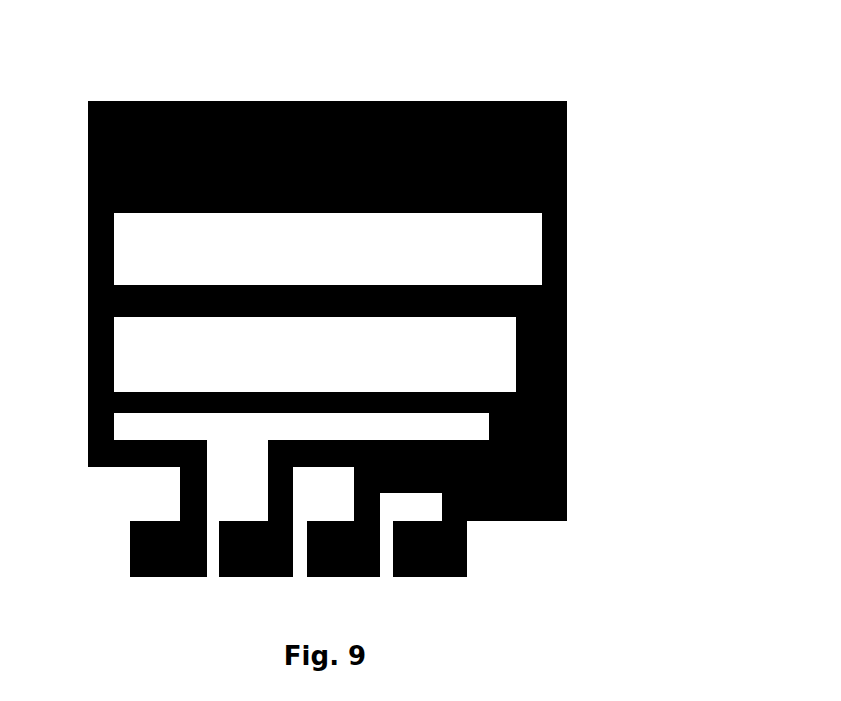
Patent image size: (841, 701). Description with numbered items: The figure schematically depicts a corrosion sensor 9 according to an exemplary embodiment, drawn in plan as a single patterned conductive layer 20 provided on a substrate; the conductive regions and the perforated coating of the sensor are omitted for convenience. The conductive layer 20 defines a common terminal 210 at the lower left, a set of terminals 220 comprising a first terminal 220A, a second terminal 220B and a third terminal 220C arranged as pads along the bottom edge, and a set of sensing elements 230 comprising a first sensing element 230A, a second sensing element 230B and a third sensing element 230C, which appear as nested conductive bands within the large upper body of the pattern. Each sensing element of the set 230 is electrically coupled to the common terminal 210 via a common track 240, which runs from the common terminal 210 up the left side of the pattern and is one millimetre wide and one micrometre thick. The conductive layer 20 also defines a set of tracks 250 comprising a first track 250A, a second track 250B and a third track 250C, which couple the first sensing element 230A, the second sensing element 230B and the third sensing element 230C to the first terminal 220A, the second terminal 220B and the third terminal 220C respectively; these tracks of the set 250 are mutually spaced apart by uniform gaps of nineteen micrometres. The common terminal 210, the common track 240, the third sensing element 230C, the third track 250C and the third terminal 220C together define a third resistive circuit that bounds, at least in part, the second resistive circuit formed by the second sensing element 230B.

The corrosion sensor 9 is at (671, 522).
The patterned conductive layer 20 is at (642, 420).
The common terminal 210 is at (131, 577).
The set of terminals 220 is at (447, 620).
The first terminal 220A is at (293, 577).
The second terminal 220B is at (380, 577).
The third terminal 220C is at (467, 577).
The set of sensing elements 230 is at (81, 225).
The first sensing element 230A is at (183, 392).
The second sensing element 230B is at (181, 285).
The third sensing element 230C is at (178, 101).
The common track 240 is at (88, 467).
The set of tracks 250 is at (540, 530).
The first track 250A is at (312, 467).
The second track 250B is at (412, 493).
The third track 250C is at (567, 415).